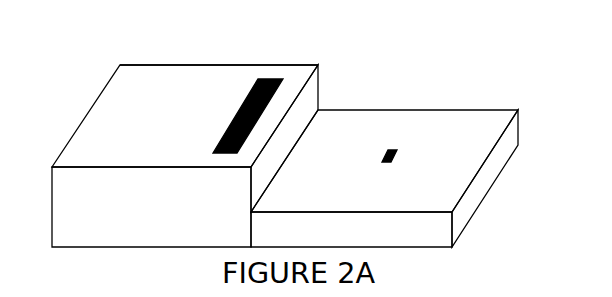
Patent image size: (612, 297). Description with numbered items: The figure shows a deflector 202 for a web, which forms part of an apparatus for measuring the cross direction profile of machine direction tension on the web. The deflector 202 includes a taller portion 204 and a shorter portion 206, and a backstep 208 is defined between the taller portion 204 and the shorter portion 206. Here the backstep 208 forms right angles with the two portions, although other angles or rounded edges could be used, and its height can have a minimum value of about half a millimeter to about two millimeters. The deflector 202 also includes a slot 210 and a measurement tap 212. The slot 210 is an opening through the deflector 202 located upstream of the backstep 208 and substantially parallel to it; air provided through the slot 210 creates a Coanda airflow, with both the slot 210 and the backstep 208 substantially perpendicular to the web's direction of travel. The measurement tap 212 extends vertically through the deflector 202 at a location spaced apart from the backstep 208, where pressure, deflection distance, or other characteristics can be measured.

The deflector 202 is at (109, 44).
The taller portion 204 is at (219, 62).
The shorter portion 206 is at (363, 107).
The backstep 208 is at (323, 79).
The slot 210 is at (227, 123).
The measurement tap 212 is at (381, 152).